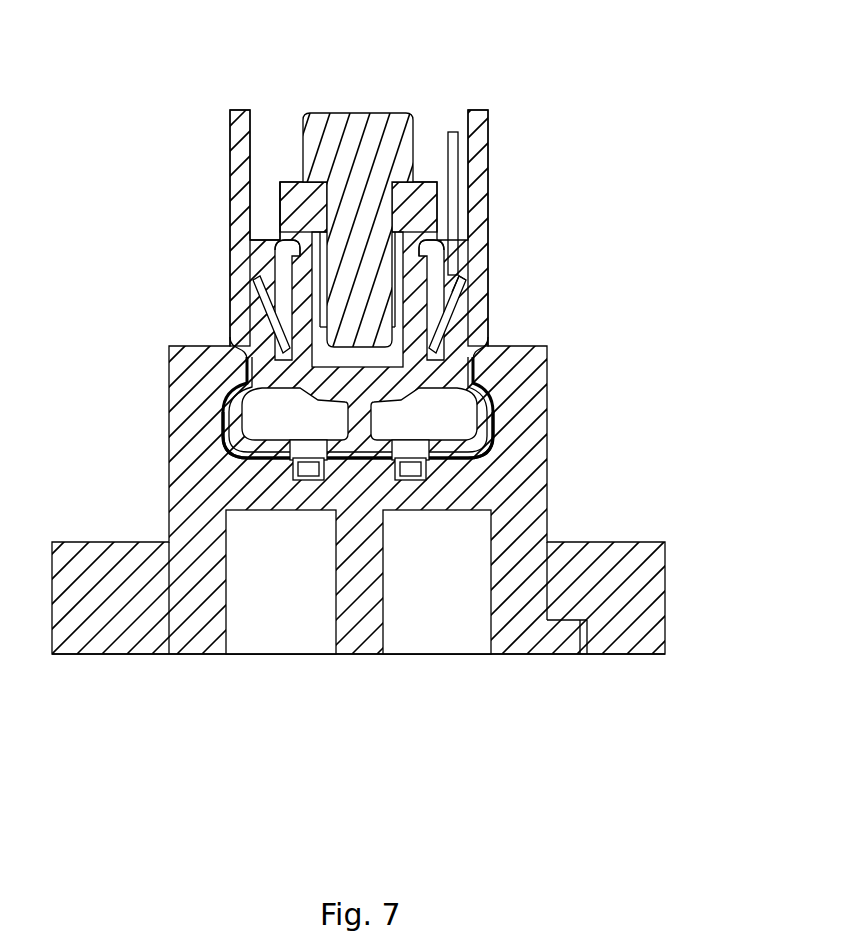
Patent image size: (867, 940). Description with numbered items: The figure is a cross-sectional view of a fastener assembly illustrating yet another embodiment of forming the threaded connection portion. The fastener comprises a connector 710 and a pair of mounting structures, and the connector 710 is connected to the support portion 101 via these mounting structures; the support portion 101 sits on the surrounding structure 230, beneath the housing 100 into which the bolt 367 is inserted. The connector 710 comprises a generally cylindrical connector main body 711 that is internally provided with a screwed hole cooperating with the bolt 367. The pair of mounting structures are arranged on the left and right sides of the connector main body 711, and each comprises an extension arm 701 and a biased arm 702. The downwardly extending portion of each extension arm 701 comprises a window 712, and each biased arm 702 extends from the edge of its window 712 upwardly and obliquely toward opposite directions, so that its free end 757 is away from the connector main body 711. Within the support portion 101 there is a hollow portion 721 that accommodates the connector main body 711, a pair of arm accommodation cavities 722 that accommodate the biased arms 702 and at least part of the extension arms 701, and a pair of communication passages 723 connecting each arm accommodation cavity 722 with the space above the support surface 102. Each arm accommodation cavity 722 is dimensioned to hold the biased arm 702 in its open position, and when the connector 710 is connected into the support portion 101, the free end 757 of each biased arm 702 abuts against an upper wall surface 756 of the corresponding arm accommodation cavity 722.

The housing 100 is at (480, 120).
The support portion 101 is at (468, 393).
The support surface 102 is at (278, 247).
The base 230 is at (548, 450).
The bolt 367 is at (357, 118).
The extension arm 701 is at (420, 242).
The biased arm 702 is at (453, 318).
The connector 710 is at (202, 203).
The connector main body 711 is at (273, 272).
The window 712 is at (258, 290).
The hollow portion 721 is at (222, 427).
The arm accommodation cavity 722 is at (183, 363).
The communication passage 723 is at (273, 248).
The upper wall surface 756 is at (457, 268).
The free end 757 is at (468, 283).